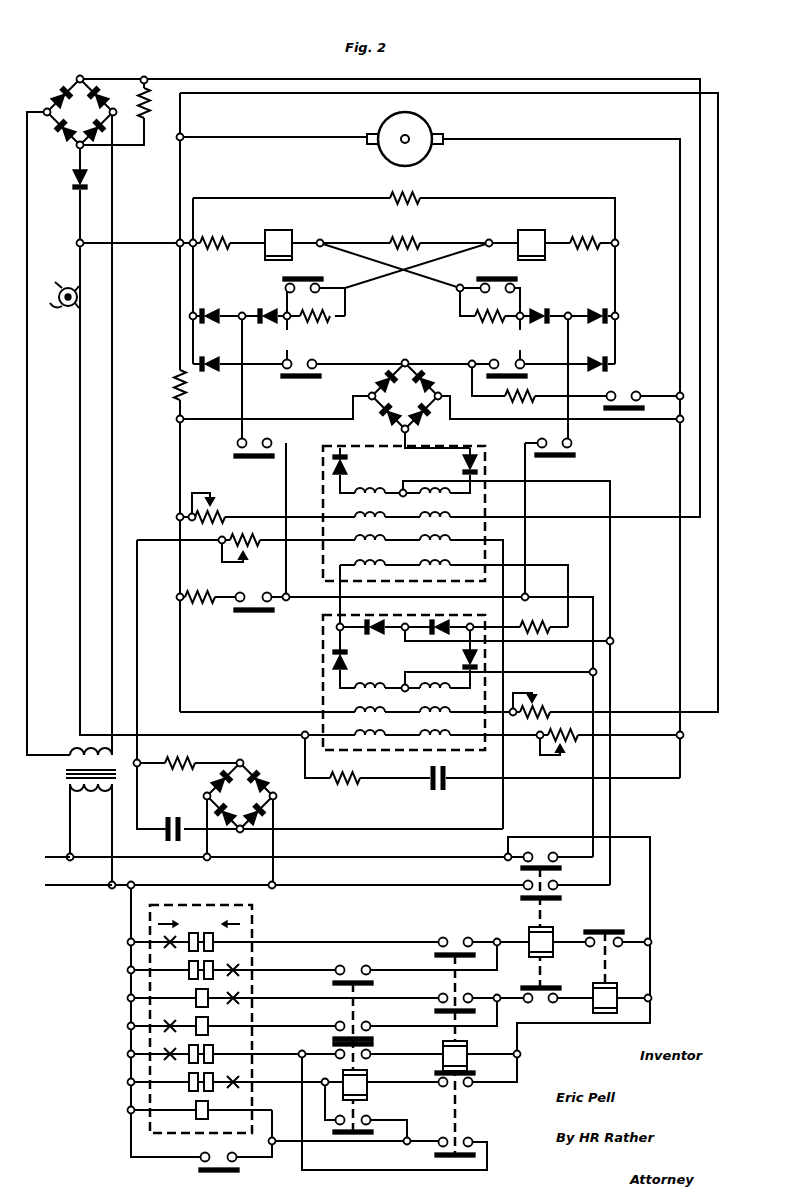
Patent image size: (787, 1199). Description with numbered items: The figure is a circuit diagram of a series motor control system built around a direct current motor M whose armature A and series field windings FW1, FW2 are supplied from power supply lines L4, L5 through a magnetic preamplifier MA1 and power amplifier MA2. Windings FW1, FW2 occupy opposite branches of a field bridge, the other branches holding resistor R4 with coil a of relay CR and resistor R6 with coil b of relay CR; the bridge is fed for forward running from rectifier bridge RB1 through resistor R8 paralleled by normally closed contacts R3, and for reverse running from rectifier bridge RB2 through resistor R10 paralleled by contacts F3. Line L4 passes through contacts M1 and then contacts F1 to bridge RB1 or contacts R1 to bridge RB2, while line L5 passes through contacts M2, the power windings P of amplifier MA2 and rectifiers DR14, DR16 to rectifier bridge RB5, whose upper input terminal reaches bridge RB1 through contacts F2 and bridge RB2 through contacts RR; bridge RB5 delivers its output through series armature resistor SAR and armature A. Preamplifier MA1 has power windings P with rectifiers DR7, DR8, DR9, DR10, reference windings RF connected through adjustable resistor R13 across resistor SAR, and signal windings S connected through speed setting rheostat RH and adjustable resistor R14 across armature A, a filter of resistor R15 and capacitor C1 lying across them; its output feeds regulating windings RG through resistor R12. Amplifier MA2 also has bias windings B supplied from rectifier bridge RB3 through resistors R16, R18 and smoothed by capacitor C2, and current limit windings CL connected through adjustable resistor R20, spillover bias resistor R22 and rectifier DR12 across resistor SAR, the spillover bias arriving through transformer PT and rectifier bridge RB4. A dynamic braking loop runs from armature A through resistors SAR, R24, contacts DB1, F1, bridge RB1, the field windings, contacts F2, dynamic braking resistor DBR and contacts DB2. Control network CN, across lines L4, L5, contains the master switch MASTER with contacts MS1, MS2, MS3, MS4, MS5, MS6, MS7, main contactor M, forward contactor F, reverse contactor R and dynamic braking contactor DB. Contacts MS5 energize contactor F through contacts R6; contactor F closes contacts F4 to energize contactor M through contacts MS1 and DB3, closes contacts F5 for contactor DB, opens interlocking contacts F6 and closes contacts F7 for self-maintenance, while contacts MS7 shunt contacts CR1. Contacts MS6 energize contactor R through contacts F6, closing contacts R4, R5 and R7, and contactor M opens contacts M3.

The rectifier bridge RB4 is at (92, 121).
The spillover bias resistor R22 is at (150, 108).
The rectifier DR12 is at (74, 186).
The speed setting rheostat RH is at (64, 284).
The armature A is at (381, 118).
The direct current motor M is at (358, 179).
The series field winding FW1 is at (414, 196).
The series field winding FW2 is at (414, 240).
The resistor R4 is at (232, 238).
The relay CR is at (290, 240).
The resistor R6 is at (576, 238).
The normally closed contacts of reverse contactor R3 is at (316, 286).
The normally closed contacts of forward contactor F3 is at (492, 286).
The resistor R8 is at (325, 323).
The resistor R10 is at (490, 324).
The forward rectifier bridge RB1 is at (228, 349).
The reverse rectifier bridge RB2 is at (602, 349).
The normally open contacts of forward contactor F2 is at (306, 350).
The normally open contacts of reverse contactor RR is at (506, 360).
The dynamic braking resistor DBR is at (522, 396).
The contacts of dynamic braking contactor DB2 is at (626, 392).
The series armature resistor SAR is at (168, 392).
The rectifier bridge RB5 is at (416, 404).
The normally open contacts of forward contactor F1 is at (255, 444).
The normally open contacts of reverse contactor R1 is at (554, 446).
The power amplifier MA2 is at (395, 445).
The rectifier DR14 is at (348, 468).
The rectifier DR16 is at (462, 470).
The power windings P is at (410, 490).
The current limit windings CL is at (420, 510).
The bias windings B is at (420, 533).
The regulating windings RG is at (422, 558).
The adjustable resistor R20 is at (220, 508).
The adjustable resistor R18 is at (252, 556).
The resistor R24 is at (218, 590).
The normally open contacts of dynamic braking contactor DB1 is at (252, 592).
The preamplifier MA1 is at (425, 613).
The rectifier DR8 is at (438, 620).
The rectifier DR9 is at (374, 632).
The rectifier DR7 is at (348, 660).
The rectifier DR10 is at (462, 658).
The reference windings RF is at (420, 704).
The signal windings S is at (420, 727).
The resistor R12 is at (530, 622).
The adjustable resistor R13 is at (543, 700).
The adjustable resistor R14 is at (562, 746).
The resistor R15 is at (356, 770).
The capacitor C1 is at (440, 792).
The transformer PT is at (66, 772).
The resistor R16 is at (188, 760).
The rectifier bridge RB3 is at (252, 805).
The filter capacitor C2 is at (170, 820).
The power supply line L4 is at (42, 861).
The power supply line L5 is at (63, 889).
The normally open contacts of main contactor M1 is at (546, 854).
The normally open contacts of main contactor M2 is at (549, 884).
The master switch MASTER is at (254, 932).
The master switch contacts MS1 is at (212, 946).
The master switch contacts MS2 is at (212, 976).
The master switch contacts MS3 is at (194, 993).
The master switch contacts MS4 is at (210, 1026).
The master switch contacts MS5 is at (210, 1054).
The master switch contacts MS6 is at (192, 1078).
The master switch contacts MS7 is at (210, 1110).
The contacts of relay CR CR1 is at (216, 1158).
The control network CN is at (364, 917).
The contacts of forward contactor F4 is at (457, 942).
The contacts of forward contactor F5 is at (464, 998).
The contacts of reverse contactor R5 is at (358, 1024).
The forward contactor F is at (470, 1054).
The reverse contactor R is at (370, 1086).
The contacts of dynamic braking contactor DB3 is at (610, 946).
The dynamic braking contactor DB is at (616, 992).
The contacts of main contactor M3 is at (544, 1002).
The interlocking contacts of forward contactor F6 is at (462, 1088).
The contacts of reverse contactor R7 is at (364, 1118).
The contacts of forward contactor F7 is at (464, 1146).